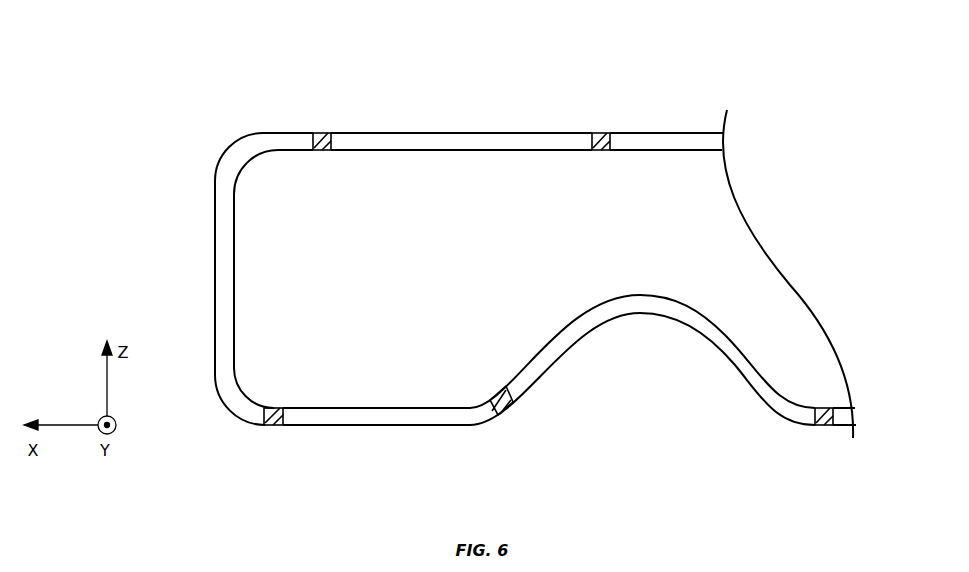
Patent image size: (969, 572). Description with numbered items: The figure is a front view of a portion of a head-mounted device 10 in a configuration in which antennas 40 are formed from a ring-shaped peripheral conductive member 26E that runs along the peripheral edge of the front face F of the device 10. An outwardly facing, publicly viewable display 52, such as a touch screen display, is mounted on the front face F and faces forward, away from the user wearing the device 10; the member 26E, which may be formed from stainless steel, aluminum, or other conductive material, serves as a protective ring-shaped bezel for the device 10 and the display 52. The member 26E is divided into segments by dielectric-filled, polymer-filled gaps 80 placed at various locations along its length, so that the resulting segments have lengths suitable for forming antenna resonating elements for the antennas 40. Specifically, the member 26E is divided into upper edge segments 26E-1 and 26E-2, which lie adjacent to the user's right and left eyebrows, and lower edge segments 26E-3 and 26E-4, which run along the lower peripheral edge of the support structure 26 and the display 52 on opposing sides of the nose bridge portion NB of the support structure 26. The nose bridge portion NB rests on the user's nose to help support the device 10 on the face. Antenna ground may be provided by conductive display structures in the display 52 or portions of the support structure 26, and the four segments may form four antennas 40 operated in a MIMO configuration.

The device 10 is at (703, 70).
The support structure 26 is at (175, 105).
The peripheral conductive member 26E is at (238, 132).
The upper edge segment 26E-1 is at (331, 120).
The upper edge segment 26E-2 is at (641, 138).
The lower edge segment 26E-3 is at (287, 445).
The lower edge segment 26E-4 is at (848, 410).
The antennas 40 is at (416, 161).
The display 52 is at (722, 172).
The gaps 80 is at (322, 152).
The front face F is at (719, 237).
The nose bridge portion NB is at (634, 338).